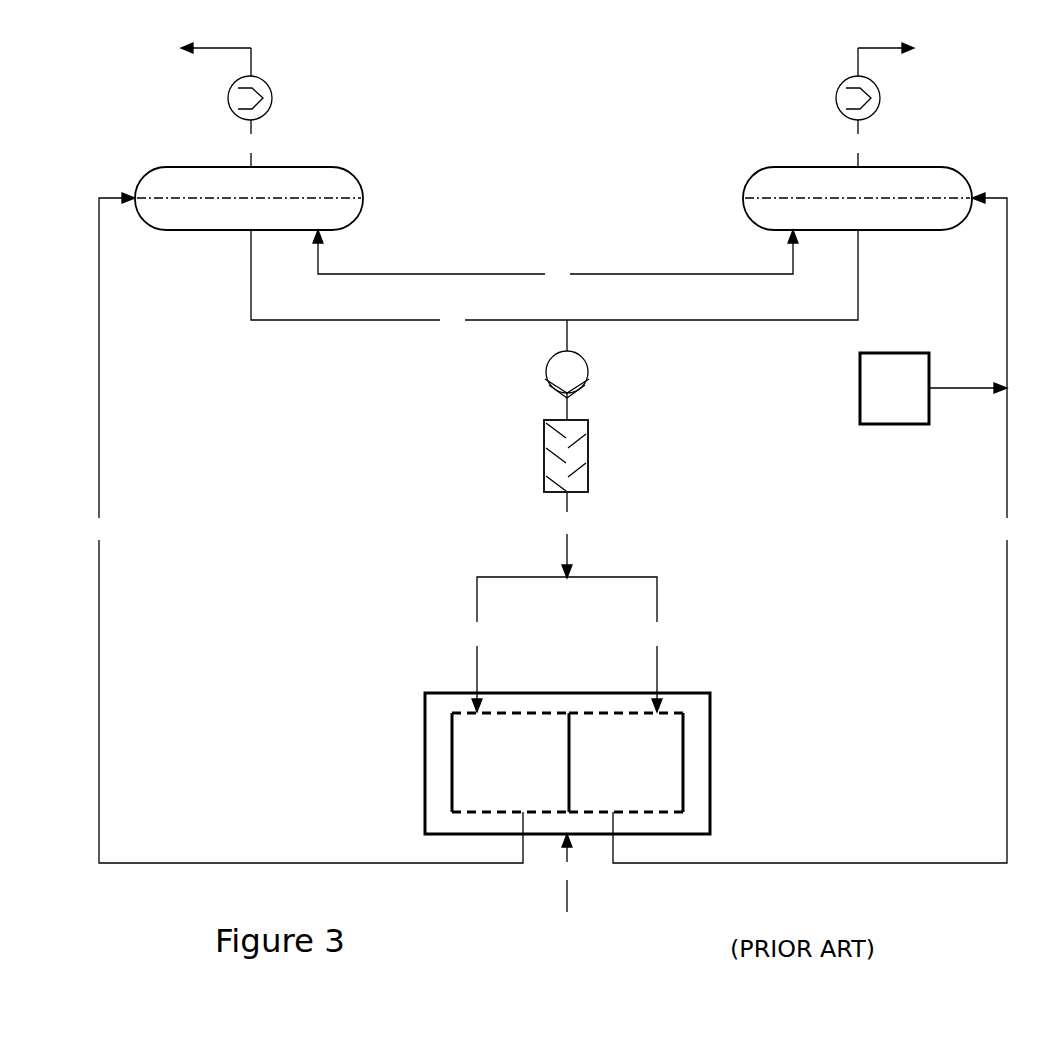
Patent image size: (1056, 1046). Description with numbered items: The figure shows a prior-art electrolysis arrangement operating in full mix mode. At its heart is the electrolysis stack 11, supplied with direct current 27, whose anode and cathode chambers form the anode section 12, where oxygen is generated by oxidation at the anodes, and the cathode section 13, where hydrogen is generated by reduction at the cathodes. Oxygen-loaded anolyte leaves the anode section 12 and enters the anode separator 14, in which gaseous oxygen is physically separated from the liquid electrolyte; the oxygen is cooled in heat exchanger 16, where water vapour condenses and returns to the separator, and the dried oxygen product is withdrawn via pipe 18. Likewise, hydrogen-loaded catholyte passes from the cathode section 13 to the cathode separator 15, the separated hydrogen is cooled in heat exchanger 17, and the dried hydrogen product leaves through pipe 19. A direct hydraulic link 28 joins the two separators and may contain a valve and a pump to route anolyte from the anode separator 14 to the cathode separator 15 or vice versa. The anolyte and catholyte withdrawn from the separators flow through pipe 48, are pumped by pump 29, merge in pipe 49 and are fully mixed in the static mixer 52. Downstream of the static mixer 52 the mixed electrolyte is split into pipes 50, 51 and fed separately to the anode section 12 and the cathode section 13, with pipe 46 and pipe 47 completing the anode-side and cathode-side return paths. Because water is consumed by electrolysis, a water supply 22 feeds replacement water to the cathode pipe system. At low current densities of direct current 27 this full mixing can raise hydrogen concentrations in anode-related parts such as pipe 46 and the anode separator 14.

The electrolysis stack 11 is at (710, 753).
The anode section 12 is at (448, 768).
The cathode section 13 is at (687, 723).
The anode separator 14 is at (309, 167).
The cathode separator 15 is at (925, 167).
The heat exchanger 16 is at (272, 96).
The heat exchanger 17 is at (880, 96).
The pipe 18 is at (251, 143).
The pipe 19 is at (858, 143).
The water supply 22 is at (933, 388).
The direct current 27 is at (567, 873).
The direct hydraulic link 28 is at (555, 257).
The pump 29 is at (547, 381).
The pipe 46 is at (305, 528).
The pipe 47 is at (815, 528).
The pipe 48 is at (554, 290).
The pipe 49 is at (567, 535).
The pipe 50 is at (516, 644).
The pipe 51 is at (617, 644).
The static mixer 52 is at (588, 450).